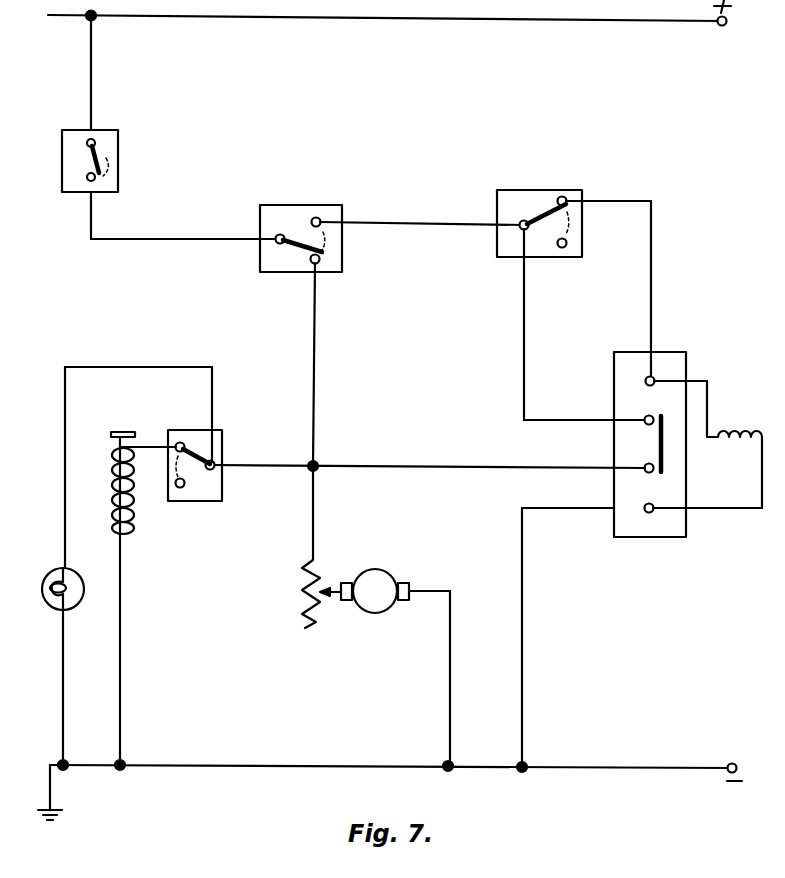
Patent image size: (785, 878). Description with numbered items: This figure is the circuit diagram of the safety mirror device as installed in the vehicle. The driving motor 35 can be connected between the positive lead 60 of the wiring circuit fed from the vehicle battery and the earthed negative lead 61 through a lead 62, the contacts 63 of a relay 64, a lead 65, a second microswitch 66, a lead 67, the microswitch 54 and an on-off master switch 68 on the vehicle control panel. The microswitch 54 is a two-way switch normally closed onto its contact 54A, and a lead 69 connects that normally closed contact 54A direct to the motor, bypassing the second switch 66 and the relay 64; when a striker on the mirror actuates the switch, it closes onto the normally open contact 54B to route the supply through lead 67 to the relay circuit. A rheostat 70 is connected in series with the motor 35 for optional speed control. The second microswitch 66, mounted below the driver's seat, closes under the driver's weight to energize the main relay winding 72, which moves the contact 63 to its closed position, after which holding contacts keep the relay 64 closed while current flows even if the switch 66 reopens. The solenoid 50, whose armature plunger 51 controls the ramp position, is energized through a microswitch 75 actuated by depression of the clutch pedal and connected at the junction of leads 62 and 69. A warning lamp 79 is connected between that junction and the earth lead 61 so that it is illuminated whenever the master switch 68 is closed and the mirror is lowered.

The positive lead 60 is at (337, 17).
The on-off master switch 68 is at (108, 133).
The microswitch 54 is at (305, 198).
The normally closed contact 54A is at (312, 264).
The normally open contact 54B is at (322, 216).
The lead 67 is at (413, 228).
The second microswitch 66 is at (542, 193).
The lead 65 is at (524, 306).
The relay 64 is at (694, 367).
The relay contacts 63 is at (661, 452).
The main relay winding 72 is at (722, 432).
The lead 69 is at (316, 315).
The lead 62 is at (447, 463).
The microswitch 75 is at (222, 450).
The armature plunger 51 is at (120, 432).
The solenoid 50 is at (134, 506).
The warning lamp 79 is at (80, 598).
The rheostat 70 is at (300, 573).
The driving motor 35 is at (385, 576).
The earthed negative lead 61 is at (215, 767).